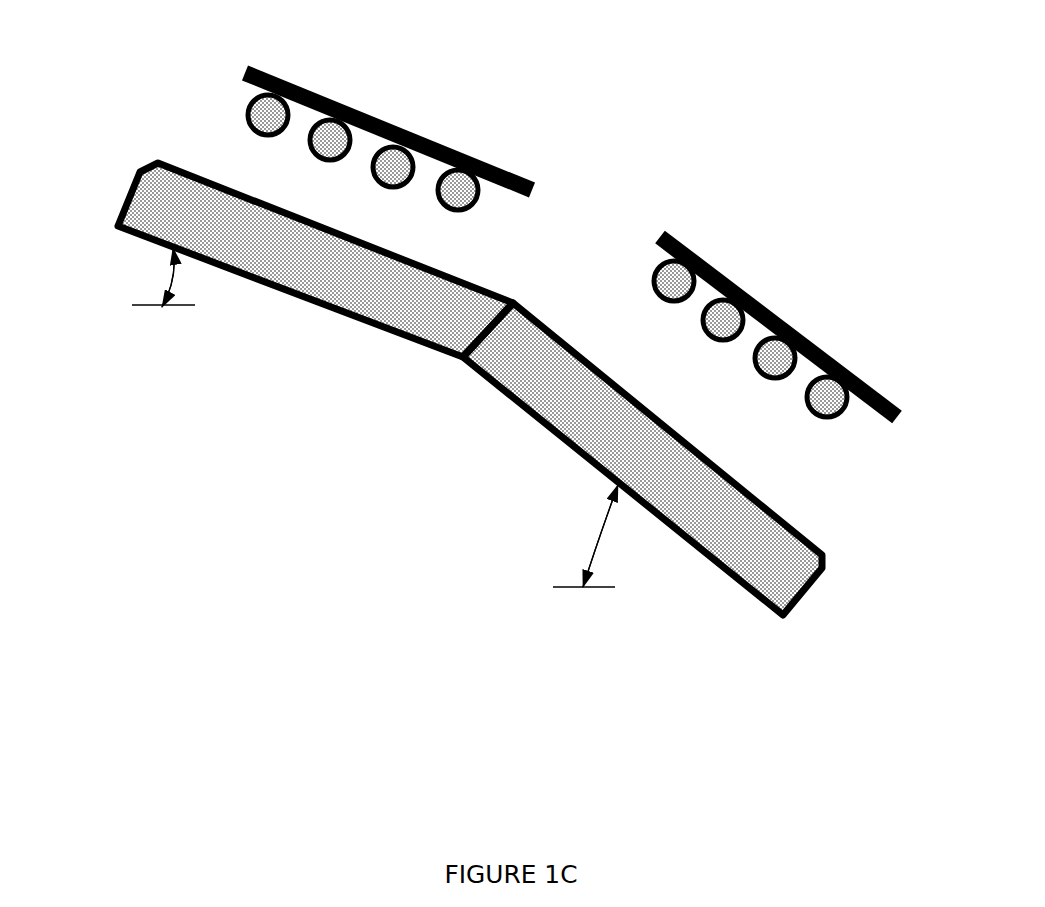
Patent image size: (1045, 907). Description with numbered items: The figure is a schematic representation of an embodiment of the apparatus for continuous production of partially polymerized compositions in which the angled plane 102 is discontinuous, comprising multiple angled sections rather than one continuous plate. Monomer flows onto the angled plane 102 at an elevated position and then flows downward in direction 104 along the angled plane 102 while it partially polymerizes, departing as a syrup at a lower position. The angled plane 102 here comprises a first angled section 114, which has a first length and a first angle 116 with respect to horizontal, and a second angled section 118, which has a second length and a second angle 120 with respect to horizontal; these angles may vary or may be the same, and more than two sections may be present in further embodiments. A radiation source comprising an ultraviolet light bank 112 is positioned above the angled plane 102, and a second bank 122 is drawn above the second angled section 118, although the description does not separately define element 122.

The angled plane 102 is at (470, 389).
The direction 104 is at (190, 150).
The ultraviolet light bank 112 is at (433, 138).
The first angled section 114 is at (393, 288).
The first angle 116 is at (163, 299).
The second angled section 118 is at (562, 392).
The second angle 120 is at (587, 558).
The second roller assembly 122 is at (768, 305).